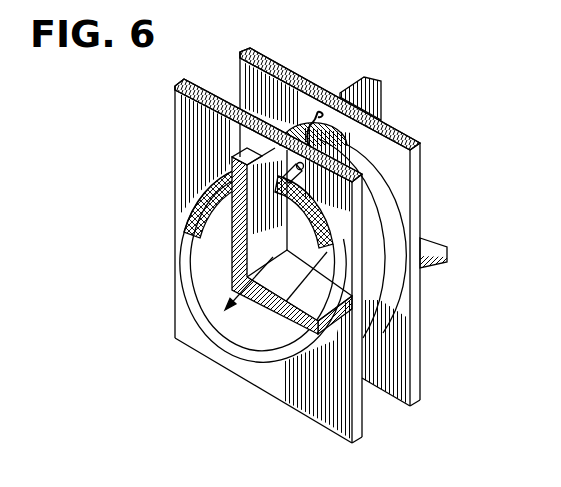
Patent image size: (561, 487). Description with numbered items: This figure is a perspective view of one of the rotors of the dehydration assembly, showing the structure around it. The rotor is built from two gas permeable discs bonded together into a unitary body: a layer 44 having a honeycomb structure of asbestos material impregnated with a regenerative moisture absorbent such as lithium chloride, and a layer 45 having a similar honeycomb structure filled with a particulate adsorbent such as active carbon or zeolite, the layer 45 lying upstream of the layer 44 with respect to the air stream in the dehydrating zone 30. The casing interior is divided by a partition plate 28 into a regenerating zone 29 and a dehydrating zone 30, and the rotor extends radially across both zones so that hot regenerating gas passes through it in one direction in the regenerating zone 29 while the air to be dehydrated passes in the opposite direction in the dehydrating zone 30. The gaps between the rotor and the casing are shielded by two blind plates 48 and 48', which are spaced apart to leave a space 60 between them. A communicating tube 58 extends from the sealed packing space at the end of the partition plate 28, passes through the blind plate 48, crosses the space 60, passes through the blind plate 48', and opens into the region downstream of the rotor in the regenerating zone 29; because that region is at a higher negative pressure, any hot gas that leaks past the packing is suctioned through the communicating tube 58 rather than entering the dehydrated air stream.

The blind plate 48' is at (268, 232).
The blind plate 48 is at (330, 204).
The space 60 is at (302, 114).
The partition plate 28 is at (378, 98).
The communicating tube 58 is at (350, 143).
The layer 44 is at (385, 205).
The layer 45 is at (370, 237).
The regenerating zone 29 is at (283, 254).
The dehydrating zone 30 is at (221, 262).